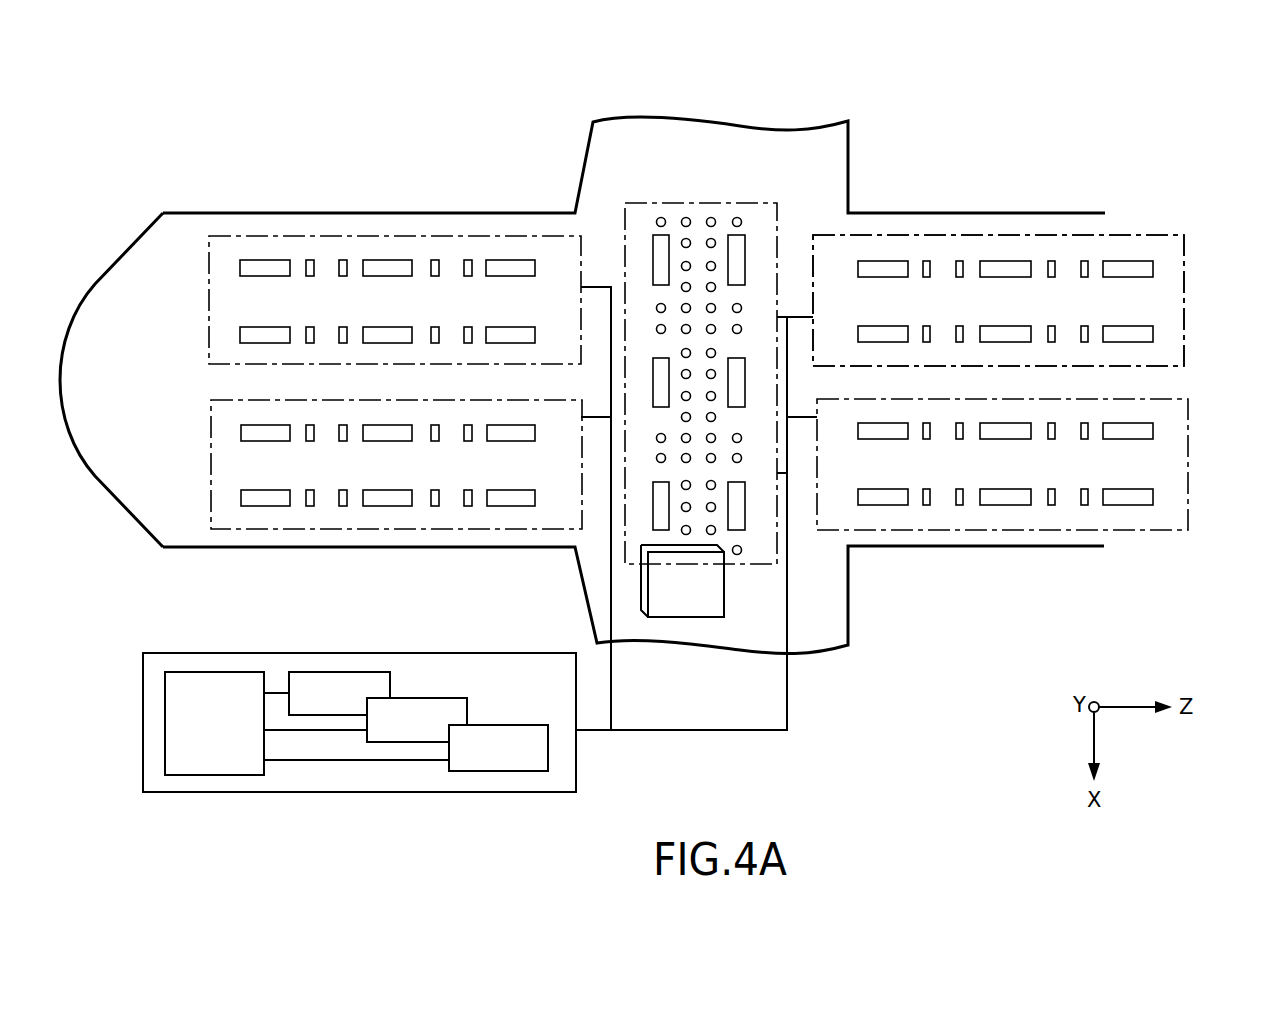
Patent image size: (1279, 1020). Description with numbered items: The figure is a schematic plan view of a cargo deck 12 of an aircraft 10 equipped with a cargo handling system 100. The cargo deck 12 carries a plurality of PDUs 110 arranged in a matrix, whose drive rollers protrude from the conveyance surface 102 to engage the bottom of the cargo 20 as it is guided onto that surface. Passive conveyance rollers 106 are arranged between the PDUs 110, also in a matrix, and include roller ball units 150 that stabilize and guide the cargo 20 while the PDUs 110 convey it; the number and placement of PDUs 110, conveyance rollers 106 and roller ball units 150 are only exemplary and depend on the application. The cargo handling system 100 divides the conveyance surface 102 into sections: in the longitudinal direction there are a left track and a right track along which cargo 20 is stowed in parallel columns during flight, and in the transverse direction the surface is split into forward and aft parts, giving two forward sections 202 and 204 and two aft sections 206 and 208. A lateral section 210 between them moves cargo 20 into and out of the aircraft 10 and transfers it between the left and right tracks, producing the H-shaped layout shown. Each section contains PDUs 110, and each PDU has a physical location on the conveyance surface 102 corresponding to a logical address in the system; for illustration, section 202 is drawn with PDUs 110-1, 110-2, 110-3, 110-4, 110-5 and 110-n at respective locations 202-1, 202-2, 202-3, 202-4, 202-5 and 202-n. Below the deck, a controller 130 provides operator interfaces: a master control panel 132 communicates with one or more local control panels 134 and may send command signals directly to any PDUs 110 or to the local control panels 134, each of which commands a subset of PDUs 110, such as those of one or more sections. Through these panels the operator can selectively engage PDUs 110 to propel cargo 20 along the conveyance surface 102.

The cargo handling system 100 is at (182, 124).
The aircraft 10 is at (313, 212).
The cargo deck 12 is at (450, 268).
The PDUs 110 is at (520, 268).
The lateral section 210 is at (630, 205).
The roller ball units 150 is at (737, 222).
The conveyance rollers 106 is at (1088, 270).
The forward section 204 is at (209, 318).
The forward section 202 is at (211, 463).
The conveyance surface 102 is at (868, 314).
The aft section 208 is at (1184, 300).
The aft section 206 is at (1188, 447).
The PDU 110-1 is at (257, 425).
The PDU 110-2 is at (379, 425).
The PDU 110-3 is at (491, 425).
The PDU 110-4 is at (279, 507).
The PDU 110-5 is at (410, 507).
The PDU 110-n is at (516, 507).
The location 202-1 is at (305, 450).
The location 202-2 is at (432, 450).
The location 202-3 is at (528, 410).
The location 202-4 is at (308, 514).
The location 202-5 is at (432, 514).
The location 202-n is at (545, 482).
The cargo 20 is at (667, 607).
The controller 130 is at (143, 700).
The master control panel 132 is at (755, 730).
The local control panels 134 is at (390, 684).